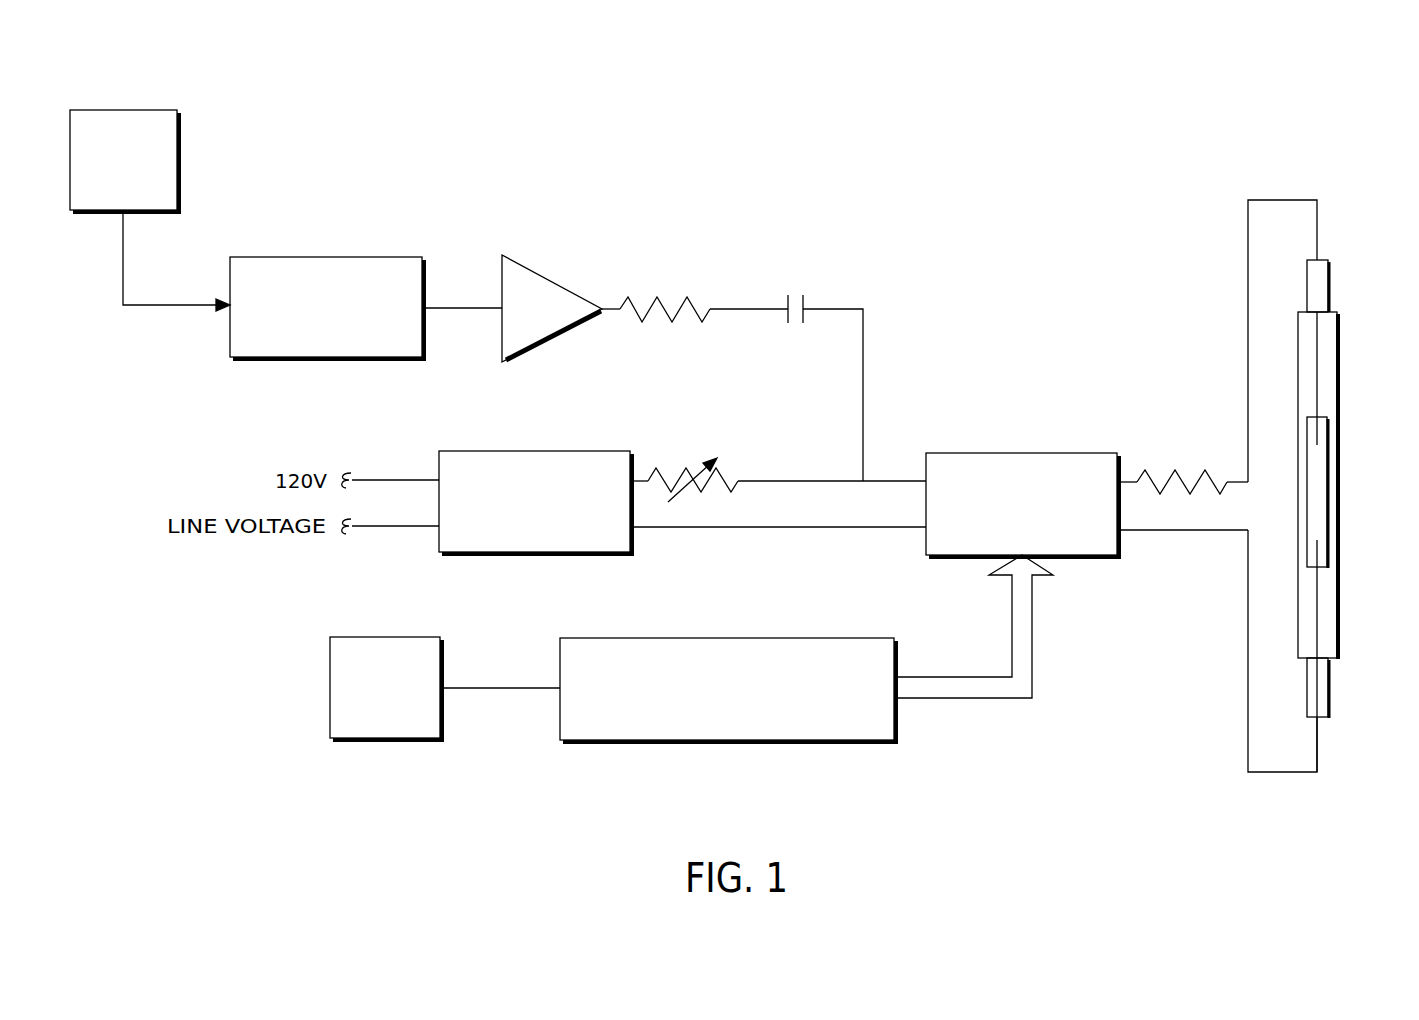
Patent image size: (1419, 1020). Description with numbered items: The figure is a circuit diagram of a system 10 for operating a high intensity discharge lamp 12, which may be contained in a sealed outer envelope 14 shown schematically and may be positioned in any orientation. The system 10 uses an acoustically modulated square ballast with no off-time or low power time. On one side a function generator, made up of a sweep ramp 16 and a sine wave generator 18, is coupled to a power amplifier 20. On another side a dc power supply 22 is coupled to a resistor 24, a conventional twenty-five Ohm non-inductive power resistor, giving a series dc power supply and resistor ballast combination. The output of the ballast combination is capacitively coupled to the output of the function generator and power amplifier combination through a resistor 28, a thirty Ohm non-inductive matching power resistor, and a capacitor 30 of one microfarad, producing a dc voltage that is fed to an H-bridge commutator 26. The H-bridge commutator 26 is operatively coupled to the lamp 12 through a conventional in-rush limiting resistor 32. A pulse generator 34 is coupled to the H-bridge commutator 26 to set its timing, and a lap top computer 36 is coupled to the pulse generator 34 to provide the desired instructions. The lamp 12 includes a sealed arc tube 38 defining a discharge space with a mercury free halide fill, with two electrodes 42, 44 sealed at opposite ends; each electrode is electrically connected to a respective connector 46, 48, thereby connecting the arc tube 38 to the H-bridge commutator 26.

The system 10 is at (946, 171).
The discharge lamp 12 is at (1354, 516).
The sealed outer envelope 14 is at (1338, 627).
The sweep ramp 16 is at (113, 170).
The sine wave generator 18 is at (315, 317).
The power amplifier 20 is at (524, 317).
The dc power supply 22 is at (523, 511).
The resistor 24 is at (723, 473).
The H-bridge commutator 26 is at (1010, 513).
The resistor 28 is at (662, 302).
The capacitor 30 is at (808, 302).
The in-rush limiting resistor 32 is at (1183, 468).
The pulse generator 34 is at (716, 698).
The lap top computer 36 is at (374, 697).
The arc tube 38 is at (1327, 487).
The electrode 42 is at (1317, 430).
The electrode 44 is at (1317, 557).
The connector 46 is at (1322, 284).
The connector 48 is at (1317, 695).